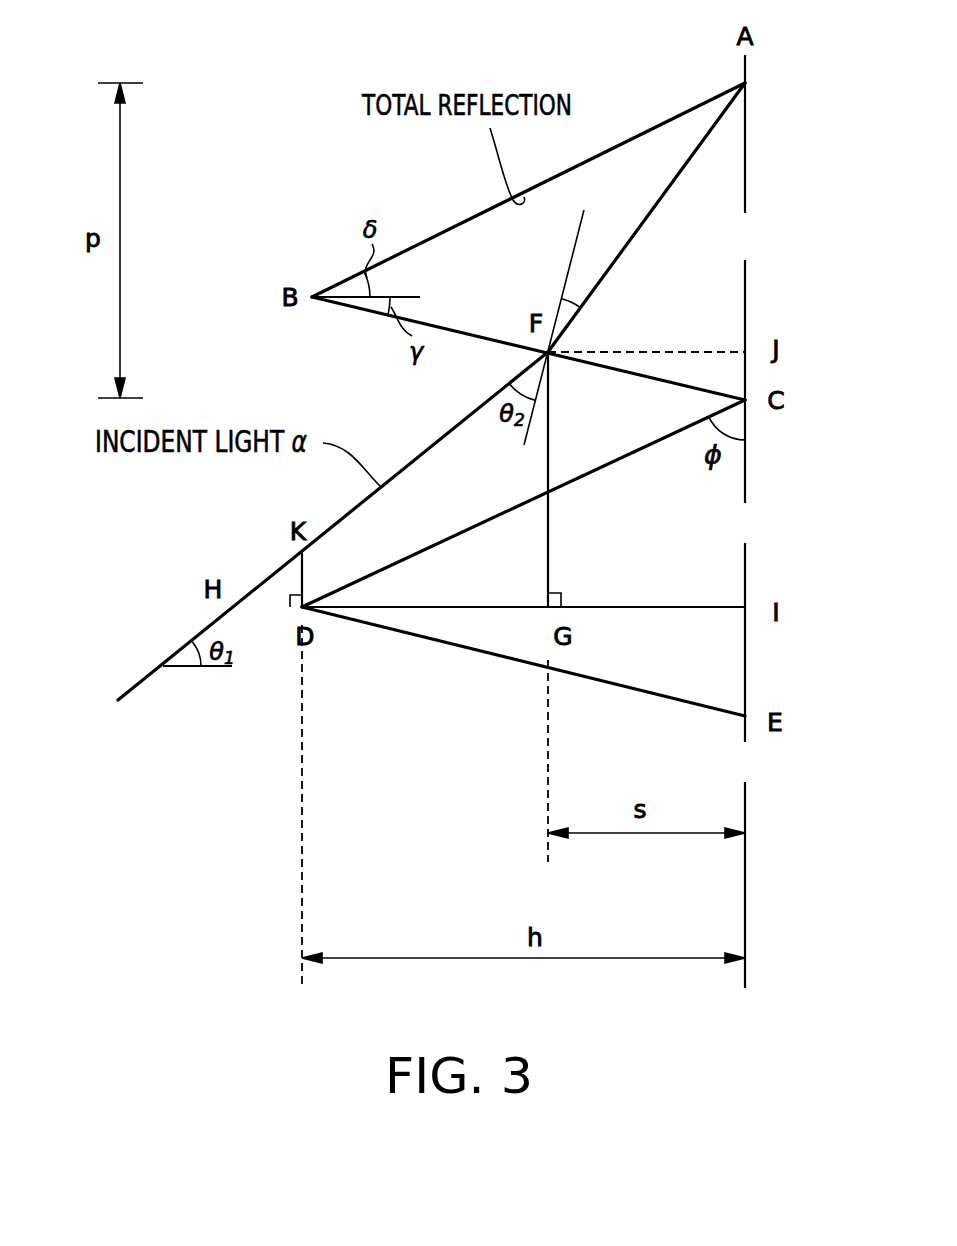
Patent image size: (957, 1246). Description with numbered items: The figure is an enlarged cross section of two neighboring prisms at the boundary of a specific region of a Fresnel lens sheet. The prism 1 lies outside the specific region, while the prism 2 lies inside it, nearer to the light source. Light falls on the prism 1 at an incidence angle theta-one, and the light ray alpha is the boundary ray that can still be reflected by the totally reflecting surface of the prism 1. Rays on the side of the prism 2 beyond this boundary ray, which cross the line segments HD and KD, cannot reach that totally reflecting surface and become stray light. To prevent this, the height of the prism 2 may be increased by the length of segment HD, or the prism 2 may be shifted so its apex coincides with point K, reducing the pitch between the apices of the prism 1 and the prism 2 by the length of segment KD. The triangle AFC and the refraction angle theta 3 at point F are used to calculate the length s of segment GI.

The prism 1 is at (802, 227).
The prism 2 is at (802, 694).
The refraction angle θ3 at point F 3 is at (562, 327).